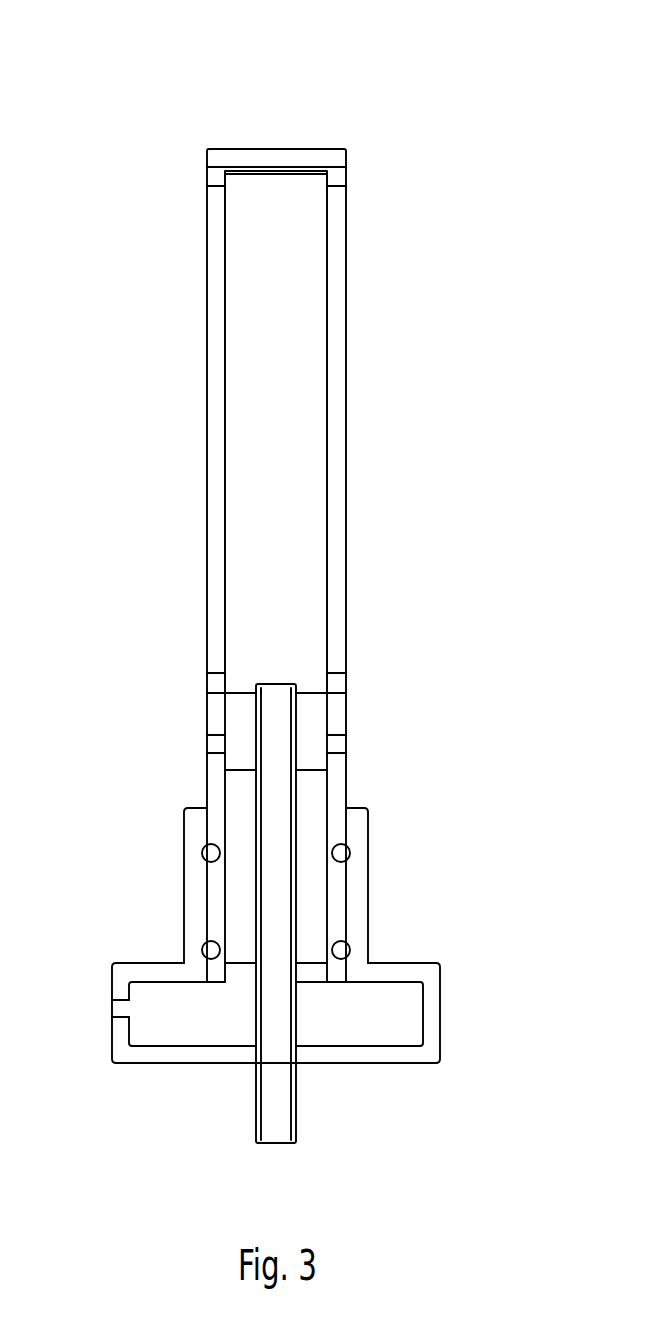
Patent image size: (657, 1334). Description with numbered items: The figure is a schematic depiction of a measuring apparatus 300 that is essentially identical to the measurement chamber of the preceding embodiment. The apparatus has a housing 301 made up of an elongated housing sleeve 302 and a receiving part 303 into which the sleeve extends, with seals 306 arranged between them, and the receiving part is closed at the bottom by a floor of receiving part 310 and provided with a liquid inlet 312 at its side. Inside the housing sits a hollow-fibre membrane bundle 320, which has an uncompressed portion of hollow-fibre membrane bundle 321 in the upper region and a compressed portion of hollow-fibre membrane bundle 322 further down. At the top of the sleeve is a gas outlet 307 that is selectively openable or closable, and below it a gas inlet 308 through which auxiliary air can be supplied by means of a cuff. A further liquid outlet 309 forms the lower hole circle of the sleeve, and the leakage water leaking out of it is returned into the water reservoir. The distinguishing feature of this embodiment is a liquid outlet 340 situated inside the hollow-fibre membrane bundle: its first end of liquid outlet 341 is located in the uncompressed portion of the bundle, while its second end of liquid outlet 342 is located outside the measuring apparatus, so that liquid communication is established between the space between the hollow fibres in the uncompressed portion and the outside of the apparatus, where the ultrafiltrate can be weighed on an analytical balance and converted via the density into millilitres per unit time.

The measuring apparatus 300 is at (180, 72).
The housing 301 is at (354, 294).
The housing sleeve 302 is at (340, 346).
The receiving part 303 is at (430, 972).
The seals 306 is at (202, 852).
The gas outlet 307 is at (340, 177).
The gas inlet 308 is at (206, 684).
The further liquid outlet 309 is at (206, 745).
The floor of receiving part 310 is at (170, 1057).
The liquid inlet 312 is at (112, 1006).
The hollow-fibre membrane bundle 320 is at (296, 423).
The uncompressed portion of hollow-fibre membrane bundle 321 is at (305, 515).
The compressed portion of hollow-fibre membrane bundle 322 is at (315, 797).
The liquid outlet 340 is at (256, 1133).
The first end of liquid outlet 341 is at (266, 683).
The second end of liquid outlet 342 is at (285, 1145).